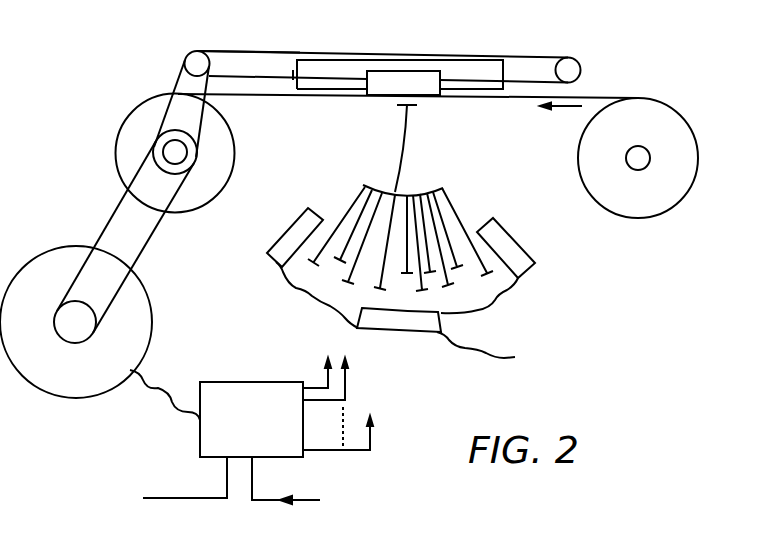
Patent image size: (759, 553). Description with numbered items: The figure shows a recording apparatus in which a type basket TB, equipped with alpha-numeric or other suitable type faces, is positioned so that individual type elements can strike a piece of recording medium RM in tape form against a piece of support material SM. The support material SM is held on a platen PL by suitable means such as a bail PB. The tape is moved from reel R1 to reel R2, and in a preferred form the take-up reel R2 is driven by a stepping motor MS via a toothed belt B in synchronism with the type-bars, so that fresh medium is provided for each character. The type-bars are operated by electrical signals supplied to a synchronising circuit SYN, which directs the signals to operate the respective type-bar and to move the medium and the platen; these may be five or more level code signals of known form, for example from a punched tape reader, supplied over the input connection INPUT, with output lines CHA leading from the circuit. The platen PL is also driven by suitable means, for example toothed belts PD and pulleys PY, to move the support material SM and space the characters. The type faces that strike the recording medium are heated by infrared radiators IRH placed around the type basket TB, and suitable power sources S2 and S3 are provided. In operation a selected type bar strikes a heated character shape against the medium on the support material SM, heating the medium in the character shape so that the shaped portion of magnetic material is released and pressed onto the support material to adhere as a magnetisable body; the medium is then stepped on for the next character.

The pulleys PY is at (192, 57).
The toothed belts PD is at (265, 50).
The platen PL is at (363, 58).
The support material SM is at (415, 75).
The bail PB is at (507, 73).
The reel R1 is at (688, 123).
The take-up reel R2 is at (127, 119).
The recording medium RM is at (278, 97).
The toothed belt B is at (112, 215).
The stepping motor MS is at (150, 315).
The infrared radiators IRH is at (533, 270).
The type basket TB is at (470, 280).
The power source S3 is at (430, 315).
The synchronising circuit SYN is at (251, 419).
The channel outputs CHA is at (356, 404).
The power source S2 is at (152, 484).
The input connection INPUT is at (326, 484).